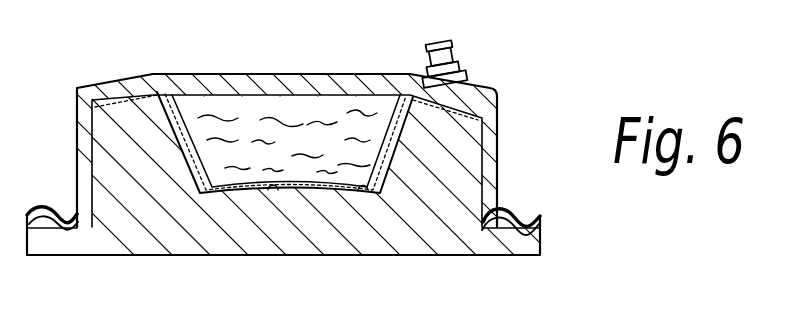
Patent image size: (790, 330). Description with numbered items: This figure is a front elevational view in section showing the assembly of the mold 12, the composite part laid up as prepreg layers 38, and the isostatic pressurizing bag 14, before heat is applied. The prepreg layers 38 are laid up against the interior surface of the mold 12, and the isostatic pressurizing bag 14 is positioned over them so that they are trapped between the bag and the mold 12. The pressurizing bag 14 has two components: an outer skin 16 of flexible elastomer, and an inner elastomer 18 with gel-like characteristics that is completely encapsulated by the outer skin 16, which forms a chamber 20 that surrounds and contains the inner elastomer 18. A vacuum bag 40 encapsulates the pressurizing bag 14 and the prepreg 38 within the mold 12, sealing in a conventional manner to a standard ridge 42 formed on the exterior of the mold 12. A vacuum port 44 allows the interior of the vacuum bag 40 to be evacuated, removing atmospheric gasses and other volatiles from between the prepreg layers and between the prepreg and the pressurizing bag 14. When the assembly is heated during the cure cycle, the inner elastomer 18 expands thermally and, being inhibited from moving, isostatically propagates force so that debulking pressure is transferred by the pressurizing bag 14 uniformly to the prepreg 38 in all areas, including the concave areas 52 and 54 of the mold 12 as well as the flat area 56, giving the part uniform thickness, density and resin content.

The mold 12 is at (470, 240).
The isostatic pressurizing bag 14 is at (385, 124).
The outer skin 16 is at (313, 90).
The inner elastomer 18 is at (170, 103).
The chamber 20 is at (222, 163).
The prepreg layers 38 is at (395, 197).
The vacuum bag 40 is at (153, 74).
The ridge 42 is at (537, 220).
The vacuum port 44 is at (465, 70).
The concave area 52 is at (214, 194).
The concave area 54 is at (350, 195).
The flat area 56 is at (270, 195).